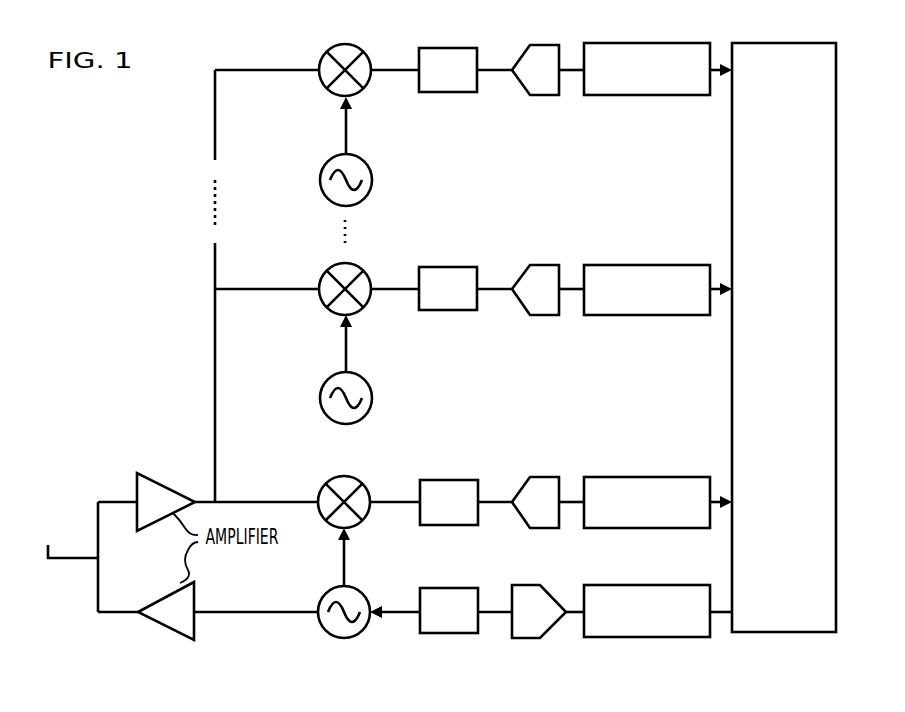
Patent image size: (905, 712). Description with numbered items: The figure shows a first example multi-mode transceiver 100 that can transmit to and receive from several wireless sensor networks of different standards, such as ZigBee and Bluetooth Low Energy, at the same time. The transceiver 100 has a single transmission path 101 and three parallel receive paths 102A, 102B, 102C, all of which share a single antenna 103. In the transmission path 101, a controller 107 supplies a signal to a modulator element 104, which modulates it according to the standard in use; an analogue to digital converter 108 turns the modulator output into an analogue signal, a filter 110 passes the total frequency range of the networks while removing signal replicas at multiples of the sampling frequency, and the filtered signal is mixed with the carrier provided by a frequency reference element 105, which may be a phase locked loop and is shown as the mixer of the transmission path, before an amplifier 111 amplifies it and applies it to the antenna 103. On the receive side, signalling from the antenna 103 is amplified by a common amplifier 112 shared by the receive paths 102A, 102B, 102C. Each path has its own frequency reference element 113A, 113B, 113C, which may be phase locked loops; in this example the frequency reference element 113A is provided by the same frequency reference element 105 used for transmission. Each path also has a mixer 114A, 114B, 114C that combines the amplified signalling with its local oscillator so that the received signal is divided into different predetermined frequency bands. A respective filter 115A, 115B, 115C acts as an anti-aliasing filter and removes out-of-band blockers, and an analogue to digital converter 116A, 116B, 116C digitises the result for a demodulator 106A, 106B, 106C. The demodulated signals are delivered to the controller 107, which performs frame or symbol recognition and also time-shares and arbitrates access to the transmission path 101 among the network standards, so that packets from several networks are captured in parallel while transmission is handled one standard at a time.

The multi-mode transceiver 100 is at (98, 228).
The transmission path 101 is at (86, 587).
The receive path 102A is at (287, 498).
The receive path 102B is at (262, 290).
The receive path 102C is at (283, 73).
The antenna 103 is at (52, 534).
The modulator element 104 is at (632, 638).
The frequency reference element 105 is at (322, 628).
The demodulator 106A is at (648, 477).
The demodulator 106B is at (662, 263).
The demodulator 106C is at (653, 95).
The controller 107 is at (777, 633).
The analogue to digital converter 108 is at (525, 622).
The filter 110 is at (437, 633).
The amplifier 111 is at (148, 615).
The amplifier 112 is at (163, 480).
The frequency reference element 113A is at (322, 587).
The frequency reference element 113B is at (318, 393).
The frequency reference element 113C is at (318, 180).
The mixer 114A is at (363, 490).
The mixer 114B is at (363, 277).
The mixer 114C is at (318, 60).
The filter 115A is at (467, 480).
The filter 115B is at (453, 267).
The filter 115C is at (443, 93).
The analogue to digital converter 116A is at (545, 477).
The analogue to digital converter 116B is at (547, 262).
The analogue to digital converter 116C is at (545, 97).